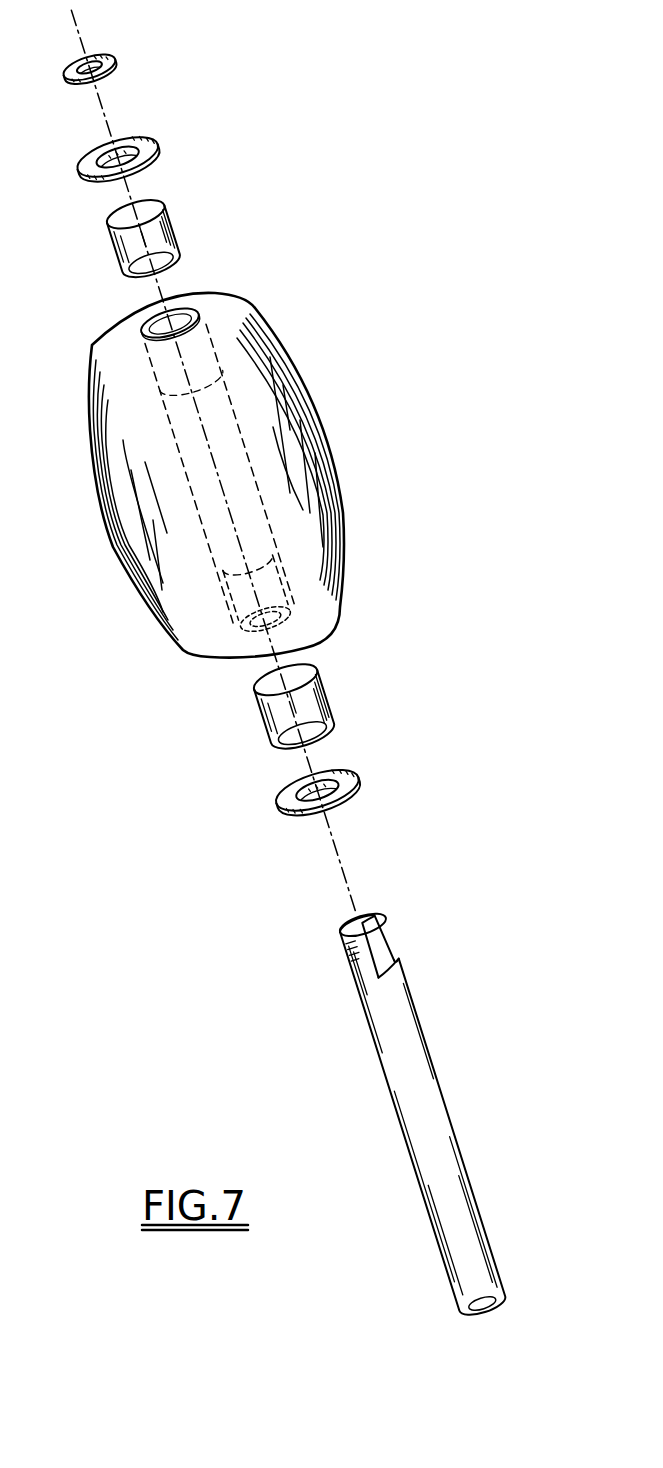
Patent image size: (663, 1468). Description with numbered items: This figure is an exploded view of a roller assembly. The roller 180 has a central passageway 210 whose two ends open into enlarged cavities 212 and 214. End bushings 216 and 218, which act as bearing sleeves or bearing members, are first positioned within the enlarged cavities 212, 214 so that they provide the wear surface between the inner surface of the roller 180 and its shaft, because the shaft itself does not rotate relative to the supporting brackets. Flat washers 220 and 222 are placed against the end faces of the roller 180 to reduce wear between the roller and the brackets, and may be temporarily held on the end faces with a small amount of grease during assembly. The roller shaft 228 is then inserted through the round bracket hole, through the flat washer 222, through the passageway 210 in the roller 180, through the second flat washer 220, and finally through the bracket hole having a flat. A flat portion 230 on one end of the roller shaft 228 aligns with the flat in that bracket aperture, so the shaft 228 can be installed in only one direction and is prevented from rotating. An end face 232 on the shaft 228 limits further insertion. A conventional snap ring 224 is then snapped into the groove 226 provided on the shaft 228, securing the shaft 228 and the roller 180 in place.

The roller 180 is at (327, 503).
The central passageway 210 is at (223, 433).
The enlarged cavity 212 is at (197, 340).
The enlarged cavity 214 is at (277, 580).
The end bushing 216 is at (163, 220).
The end bushing 218 is at (320, 700).
The flat washer 220 is at (150, 137).
The flat washer 222 is at (357, 768).
The snap ring 224 is at (110, 50).
The groove 226 is at (380, 917).
The roller shaft 228 is at (438, 1127).
The flat portion 230 is at (377, 950).
The end face 232 is at (393, 962).